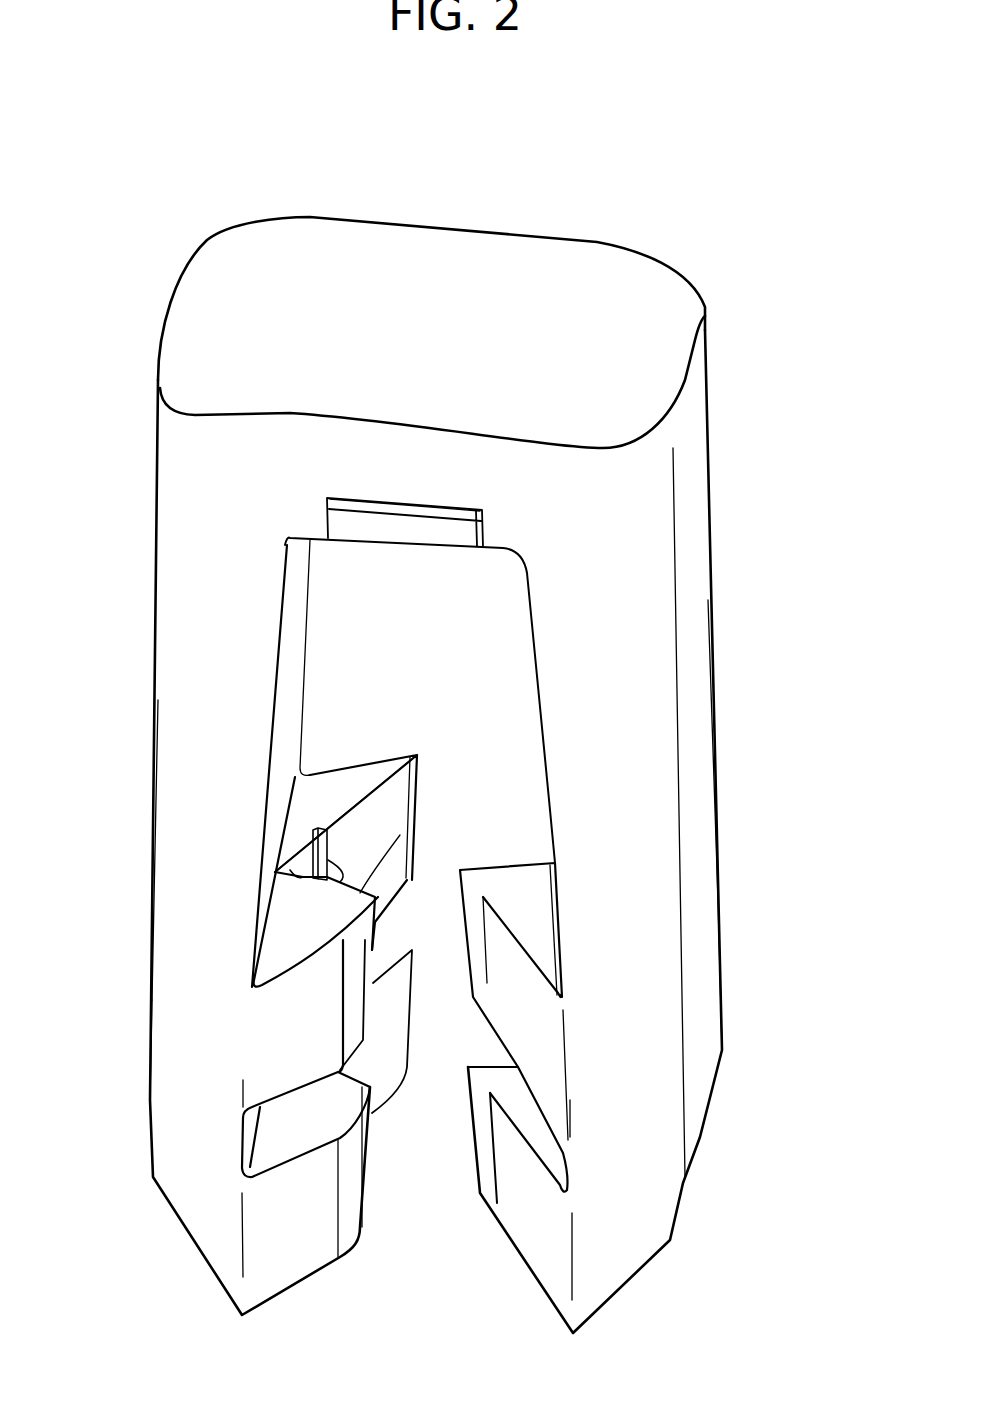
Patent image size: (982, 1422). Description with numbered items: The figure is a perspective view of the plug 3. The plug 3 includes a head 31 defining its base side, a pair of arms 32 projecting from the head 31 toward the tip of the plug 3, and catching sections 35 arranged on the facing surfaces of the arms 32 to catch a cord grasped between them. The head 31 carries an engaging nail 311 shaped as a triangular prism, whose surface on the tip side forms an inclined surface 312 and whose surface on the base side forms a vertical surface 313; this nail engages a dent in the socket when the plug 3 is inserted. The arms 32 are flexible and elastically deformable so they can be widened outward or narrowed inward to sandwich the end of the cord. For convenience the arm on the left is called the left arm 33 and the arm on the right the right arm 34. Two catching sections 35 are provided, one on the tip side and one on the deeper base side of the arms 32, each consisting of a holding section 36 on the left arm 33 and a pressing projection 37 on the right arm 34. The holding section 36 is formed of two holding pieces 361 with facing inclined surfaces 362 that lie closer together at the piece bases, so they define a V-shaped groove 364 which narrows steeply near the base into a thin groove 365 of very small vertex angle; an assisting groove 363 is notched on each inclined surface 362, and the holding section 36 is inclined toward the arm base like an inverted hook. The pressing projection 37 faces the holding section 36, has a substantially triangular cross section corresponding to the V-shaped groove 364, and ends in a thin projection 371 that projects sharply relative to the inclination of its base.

The plug 3 is at (700, 448).
The head 31 is at (173, 472).
The arm 32 is at (163, 880).
The left arm 33 is at (190, 985).
The right arm 34 is at (663, 985).
The catching section 35 is at (378, 668).
The holding section 36 is at (333, 964).
The pressing projection 37 is at (489, 937).
The engaging nail 311 is at (482, 523).
The inclined surface 312 is at (370, 528).
The vertical surface 313 is at (398, 510).
The holding piece 361 is at (367, 783).
The inclined surface 362 is at (393, 877).
The assisting groove 363 is at (343, 810).
The V-shaped groove 364 is at (345, 868).
The thin groove 365 is at (300, 868).
The thin projection 371 is at (472, 957).